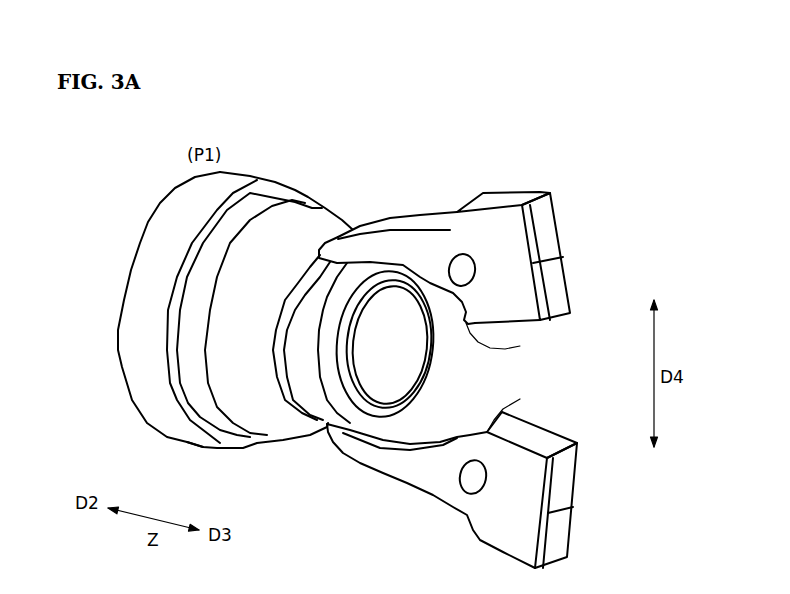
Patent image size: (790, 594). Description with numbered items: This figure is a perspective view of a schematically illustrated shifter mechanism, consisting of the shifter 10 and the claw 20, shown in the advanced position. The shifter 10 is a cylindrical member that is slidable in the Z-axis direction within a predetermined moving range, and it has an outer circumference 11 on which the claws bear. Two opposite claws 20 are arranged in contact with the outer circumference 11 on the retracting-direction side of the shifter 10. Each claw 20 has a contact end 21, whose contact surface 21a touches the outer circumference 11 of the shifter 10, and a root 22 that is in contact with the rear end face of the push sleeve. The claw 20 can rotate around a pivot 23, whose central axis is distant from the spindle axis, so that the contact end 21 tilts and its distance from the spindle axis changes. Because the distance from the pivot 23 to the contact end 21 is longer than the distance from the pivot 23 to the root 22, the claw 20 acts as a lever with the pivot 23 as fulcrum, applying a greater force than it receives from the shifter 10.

The shifter 10 is at (158, 202).
The outer circumference 11 is at (332, 207).
The claw 20 is at (556, 199).
The contact end 21 is at (362, 222).
The contact surface 21a is at (370, 421).
The root 22 is at (520, 346).
The pivot 23 is at (475, 264).